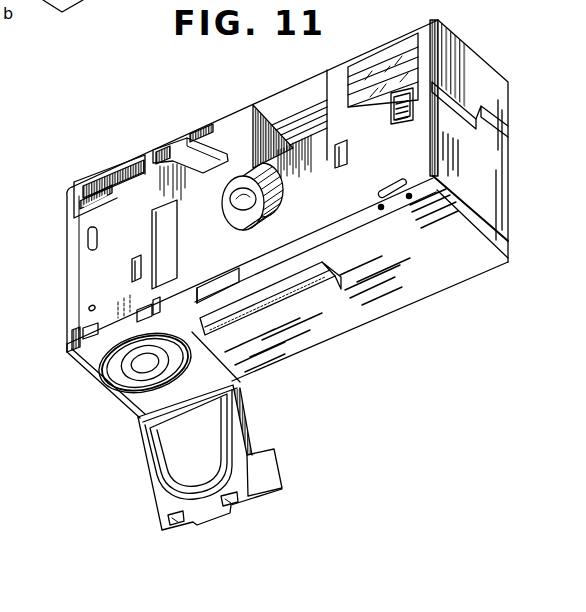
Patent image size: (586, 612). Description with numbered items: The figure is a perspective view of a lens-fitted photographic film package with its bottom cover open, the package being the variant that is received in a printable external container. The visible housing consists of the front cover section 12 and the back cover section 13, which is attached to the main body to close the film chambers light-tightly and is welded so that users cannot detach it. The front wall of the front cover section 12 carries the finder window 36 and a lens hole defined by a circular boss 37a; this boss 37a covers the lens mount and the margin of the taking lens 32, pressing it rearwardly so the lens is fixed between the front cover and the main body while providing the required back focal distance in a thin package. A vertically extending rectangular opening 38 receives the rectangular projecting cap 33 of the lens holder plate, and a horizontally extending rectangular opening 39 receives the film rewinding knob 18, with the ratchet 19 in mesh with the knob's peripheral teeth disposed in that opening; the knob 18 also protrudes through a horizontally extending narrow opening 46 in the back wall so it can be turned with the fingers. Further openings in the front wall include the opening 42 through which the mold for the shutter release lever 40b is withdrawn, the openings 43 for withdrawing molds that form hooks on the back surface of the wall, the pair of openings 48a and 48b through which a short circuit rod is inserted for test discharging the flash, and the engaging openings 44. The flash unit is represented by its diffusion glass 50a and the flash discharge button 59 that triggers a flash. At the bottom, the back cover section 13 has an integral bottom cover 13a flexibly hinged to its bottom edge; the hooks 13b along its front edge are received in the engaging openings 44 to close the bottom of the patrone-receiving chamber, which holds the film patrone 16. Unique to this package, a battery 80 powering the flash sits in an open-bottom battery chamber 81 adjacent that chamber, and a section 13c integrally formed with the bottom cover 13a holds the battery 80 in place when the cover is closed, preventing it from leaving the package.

The front cover section 12 is at (163, 133).
The back cover section 13 is at (408, 303).
The bottom cover 13a is at (162, 512).
The hooks 13b is at (173, 524).
The section 13c is at (270, 478).
The film patrone 16 is at (118, 372).
The film rewinding knob 18 is at (129, 173).
The ratchet 19 is at (73, 205).
The taking lens 32 is at (258, 210).
The projecting cap 33 is at (168, 243).
The finder window 36 is at (308, 110).
The circular boss 37a is at (273, 195).
The vertically extending rectangular opening 38 is at (155, 238).
The horizontally extending rectangular opening 39 is at (127, 199).
The shutter release lever 40b is at (186, 147).
The opening 42 is at (208, 171).
The openings 43 is at (348, 155).
The engaging openings 44 is at (75, 313).
The horizontally extending narrow opening 46 is at (416, 106).
The opening 48a is at (381, 212).
The opening 48b is at (412, 199).
The diffusion glass 50a is at (393, 53).
The flash discharge button 59 is at (403, 122).
The battery 80 is at (287, 293).
The battery chamber 81 is at (187, 303).